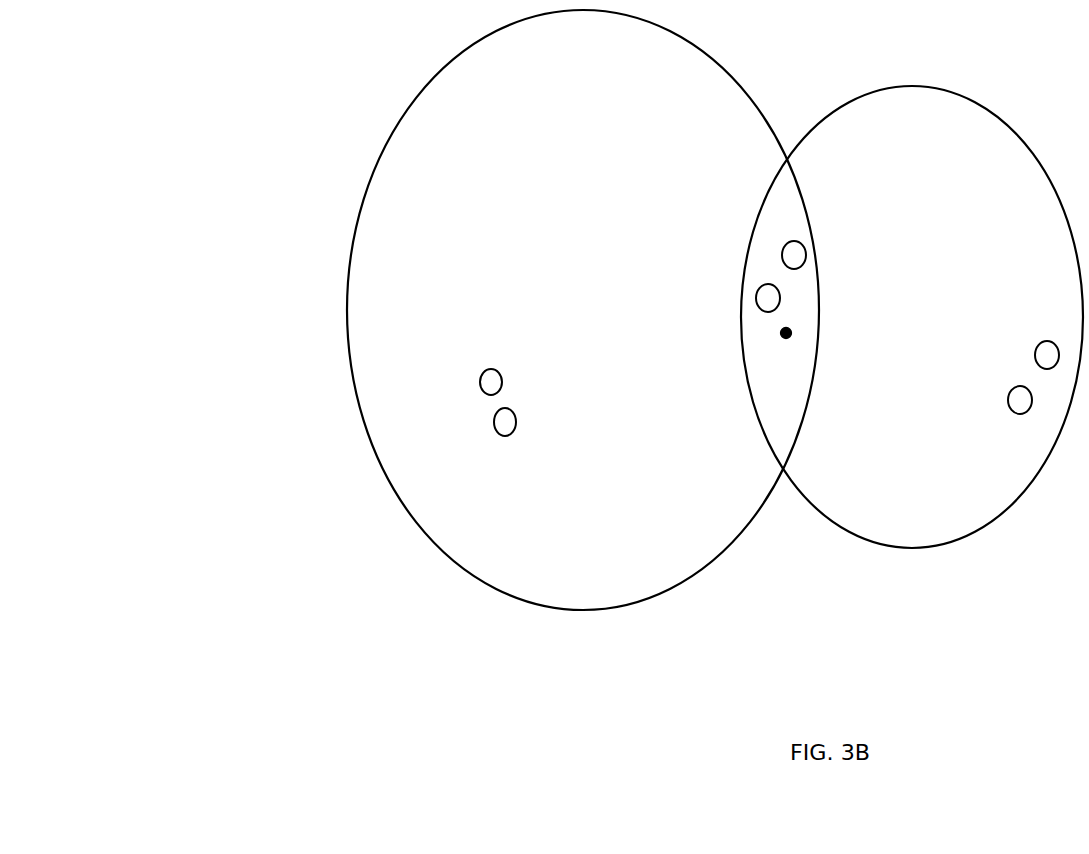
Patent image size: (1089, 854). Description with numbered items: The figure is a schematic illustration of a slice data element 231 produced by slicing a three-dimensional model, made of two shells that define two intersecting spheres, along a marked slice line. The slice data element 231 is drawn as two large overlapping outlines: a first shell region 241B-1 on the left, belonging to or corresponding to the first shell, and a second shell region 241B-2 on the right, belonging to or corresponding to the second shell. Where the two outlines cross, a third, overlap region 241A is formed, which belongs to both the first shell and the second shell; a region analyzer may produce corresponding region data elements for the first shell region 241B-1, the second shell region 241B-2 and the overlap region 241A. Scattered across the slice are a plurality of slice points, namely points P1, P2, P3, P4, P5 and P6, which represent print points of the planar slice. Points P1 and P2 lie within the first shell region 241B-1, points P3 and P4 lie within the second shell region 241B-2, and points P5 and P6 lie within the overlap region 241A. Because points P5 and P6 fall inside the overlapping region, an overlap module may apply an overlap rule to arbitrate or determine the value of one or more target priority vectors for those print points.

The slice data element 231 is at (301, 375).
The first shell region 241B-1 is at (523, 213).
The second shell region 241B-2 is at (988, 213).
The overlap region 241A is at (787, 340).
The slice point P1 is at (488, 390).
The slice point P2 is at (503, 428).
The slice point P3 is at (1048, 369).
The slice point P4 is at (1021, 414).
The slice point P5 is at (767, 293).
The slice point P6 is at (787, 245).